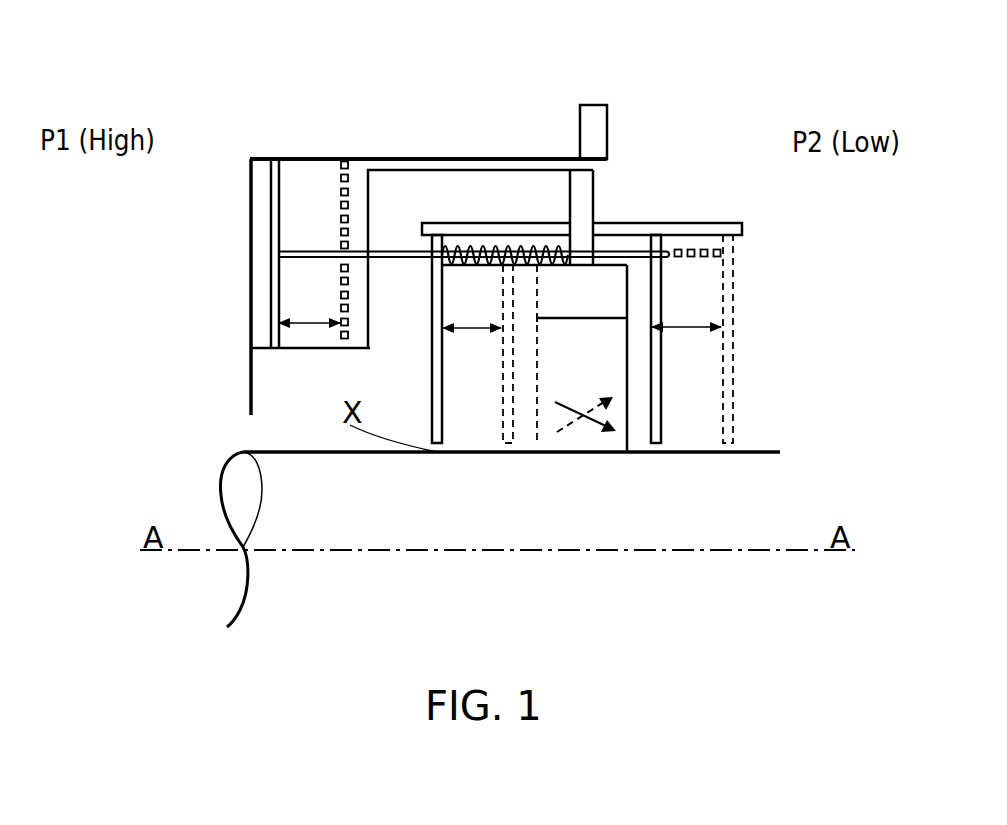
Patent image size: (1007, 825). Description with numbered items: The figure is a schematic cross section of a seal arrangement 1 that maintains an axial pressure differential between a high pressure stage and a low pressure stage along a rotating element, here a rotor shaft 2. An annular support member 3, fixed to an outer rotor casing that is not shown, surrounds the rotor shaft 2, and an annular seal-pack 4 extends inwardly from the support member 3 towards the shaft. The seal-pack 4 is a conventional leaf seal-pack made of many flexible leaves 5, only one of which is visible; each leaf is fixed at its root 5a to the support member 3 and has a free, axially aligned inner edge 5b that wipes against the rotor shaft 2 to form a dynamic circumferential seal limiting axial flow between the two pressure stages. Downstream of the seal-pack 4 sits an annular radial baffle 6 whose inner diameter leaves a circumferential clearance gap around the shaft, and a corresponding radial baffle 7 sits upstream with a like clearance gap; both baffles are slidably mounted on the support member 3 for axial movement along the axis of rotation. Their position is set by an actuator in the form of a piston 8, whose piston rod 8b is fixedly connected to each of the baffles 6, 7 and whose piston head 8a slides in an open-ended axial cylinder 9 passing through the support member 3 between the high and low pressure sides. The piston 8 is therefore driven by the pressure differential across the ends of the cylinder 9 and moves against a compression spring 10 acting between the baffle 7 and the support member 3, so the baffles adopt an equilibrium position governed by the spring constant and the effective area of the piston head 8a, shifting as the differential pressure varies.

The seal arrangement 1 is at (405, 72).
The rotor shaft 2 is at (277, 602).
The annular support member 3 is at (587, 178).
The annular seal-pack 4 is at (595, 330).
The flexible leaf 5 is at (627, 358).
The root 5a is at (596, 317).
The inner edge 5b is at (580, 452).
The radial baffle 6 is at (655, 350).
The radial baffle 7 is at (433, 369).
The piston 8 is at (242, 188).
The piston head 8a is at (268, 217).
The piston rod 8b is at (322, 248).
The axial cylinder 9 is at (442, 158).
The compression spring 10 is at (467, 263).